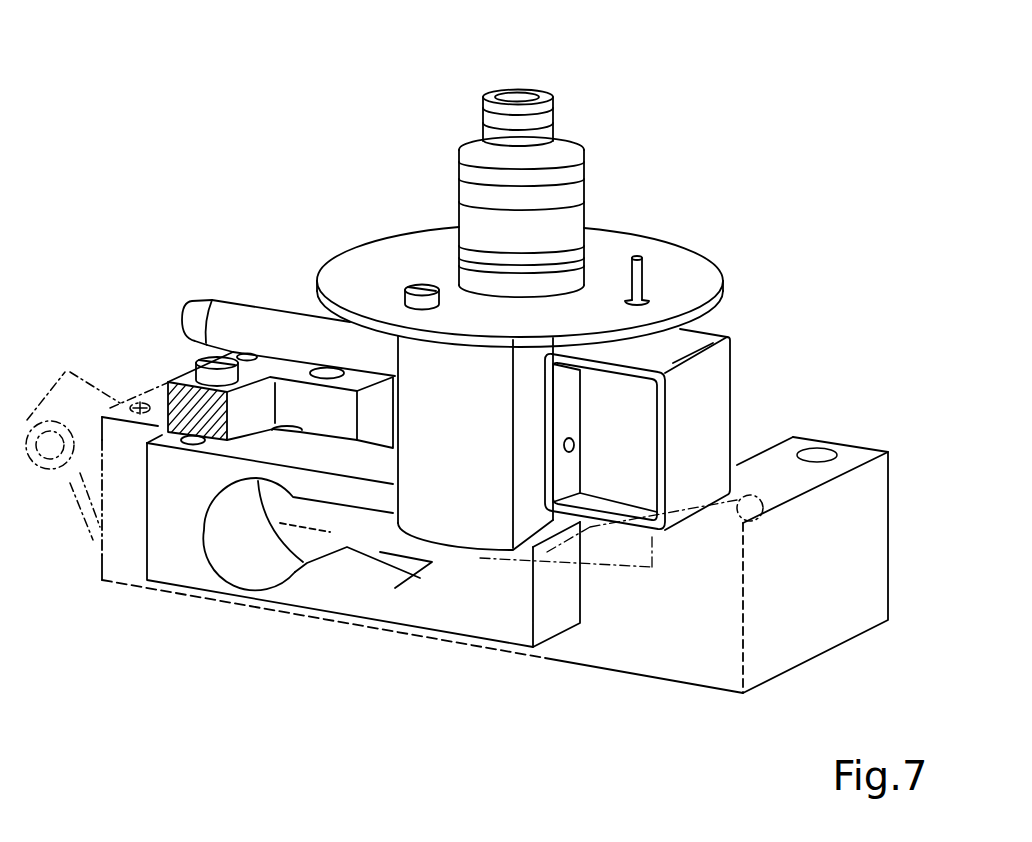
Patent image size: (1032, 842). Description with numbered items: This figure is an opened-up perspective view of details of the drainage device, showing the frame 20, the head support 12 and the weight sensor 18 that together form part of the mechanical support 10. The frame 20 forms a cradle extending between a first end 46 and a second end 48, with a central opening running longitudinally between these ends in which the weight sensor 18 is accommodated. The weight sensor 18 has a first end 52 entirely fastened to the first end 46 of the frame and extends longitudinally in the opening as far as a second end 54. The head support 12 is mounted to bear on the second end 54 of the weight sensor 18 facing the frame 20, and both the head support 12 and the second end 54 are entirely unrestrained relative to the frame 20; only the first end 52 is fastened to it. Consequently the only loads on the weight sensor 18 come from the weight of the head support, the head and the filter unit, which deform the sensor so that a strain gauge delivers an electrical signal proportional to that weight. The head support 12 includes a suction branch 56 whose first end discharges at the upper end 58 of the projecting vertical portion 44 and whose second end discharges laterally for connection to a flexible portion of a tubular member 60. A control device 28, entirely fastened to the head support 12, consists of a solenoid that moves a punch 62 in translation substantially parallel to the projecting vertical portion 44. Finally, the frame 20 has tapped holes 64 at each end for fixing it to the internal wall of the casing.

The mechanical support 10 is at (293, 167).
The head support 12 is at (471, 425).
The weight sensor 18 is at (340, 598).
The frame 20 is at (812, 642).
The control device 28 is at (722, 373).
The projecting vertical portion 44 is at (472, 213).
The first end of the frame 46 is at (177, 378).
The second end of the frame 48 is at (770, 470).
The first end of the weight sensor 52 is at (178, 553).
The second end of the weight sensor 54 is at (503, 607).
The suction branch 56 is at (515, 97).
The upper end of the projecting vertical portion 58 is at (476, 122).
The tubular member 60 is at (247, 322).
The punch 62 is at (638, 278).
The tapped holes 64 is at (123, 388).